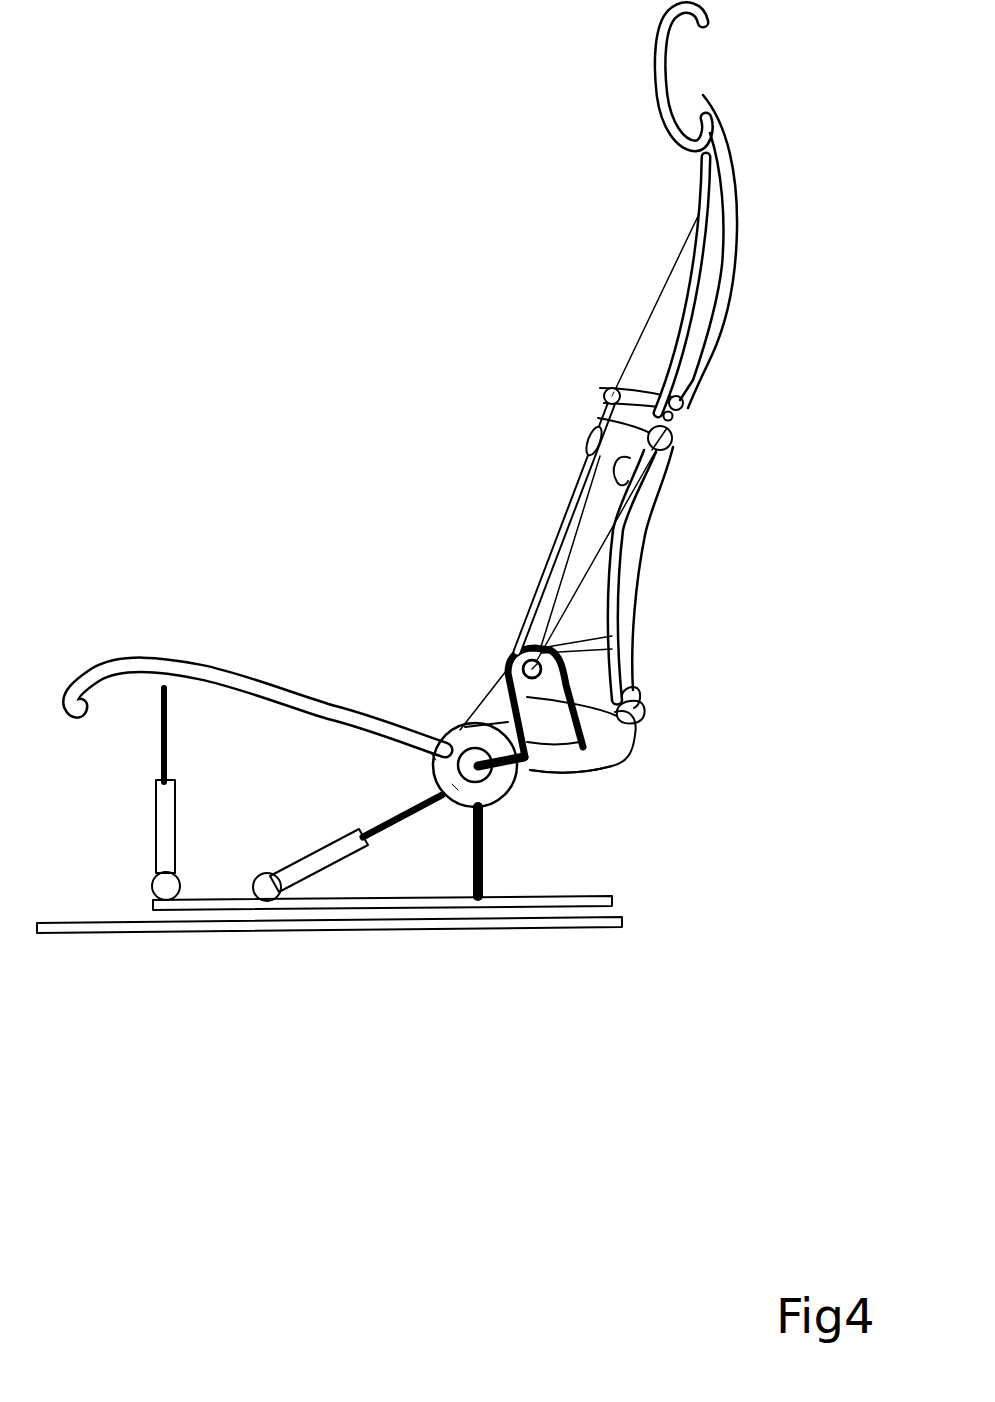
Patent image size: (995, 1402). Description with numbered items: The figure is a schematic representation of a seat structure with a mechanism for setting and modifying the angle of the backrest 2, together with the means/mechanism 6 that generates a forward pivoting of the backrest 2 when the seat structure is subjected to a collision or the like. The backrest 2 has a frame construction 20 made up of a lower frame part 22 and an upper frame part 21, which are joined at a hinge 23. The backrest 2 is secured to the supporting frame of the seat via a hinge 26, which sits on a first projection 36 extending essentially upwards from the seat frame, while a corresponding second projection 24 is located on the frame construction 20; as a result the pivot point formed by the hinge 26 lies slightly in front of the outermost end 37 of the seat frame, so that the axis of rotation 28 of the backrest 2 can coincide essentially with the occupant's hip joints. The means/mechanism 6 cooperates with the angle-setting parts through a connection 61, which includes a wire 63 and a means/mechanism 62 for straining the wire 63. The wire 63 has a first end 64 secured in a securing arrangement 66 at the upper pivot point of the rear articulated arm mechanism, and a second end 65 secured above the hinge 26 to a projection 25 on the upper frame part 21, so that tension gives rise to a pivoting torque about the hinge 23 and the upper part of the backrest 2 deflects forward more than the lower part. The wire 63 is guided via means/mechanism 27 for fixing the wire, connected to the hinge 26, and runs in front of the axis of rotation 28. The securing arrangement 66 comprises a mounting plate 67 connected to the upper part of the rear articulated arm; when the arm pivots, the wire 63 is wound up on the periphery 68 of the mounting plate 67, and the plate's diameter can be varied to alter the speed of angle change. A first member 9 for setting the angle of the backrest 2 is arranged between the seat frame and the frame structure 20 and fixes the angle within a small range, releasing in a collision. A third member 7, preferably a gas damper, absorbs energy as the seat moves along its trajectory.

The backrest 2 is at (700, 418).
The means/mechanism for generating a forward pivoting of the backrest 6 is at (375, 680).
The third member 7 is at (312, 850).
The first member for setting the angle of the backrest 9 is at (634, 714).
The frame construction of the backrest 20 is at (648, 541).
The upper frame part 21 is at (705, 342).
The lower frame part 22 is at (624, 590).
The hinge 23 is at (673, 440).
The second projection 24 is at (533, 663).
The projection 25 is at (610, 388).
The hinge 26 is at (525, 672).
The means/mechanism for fixing the wire 27 is at (525, 658).
The pivot point / axis of rotation 28 is at (576, 644).
The first projection 36 is at (550, 725).
The outermost end of the supporting frame of the seat 37 is at (630, 755).
The connection 61 is at (620, 431).
The means/mechanism for straining the wire 62 is at (452, 725).
The wire 63 is at (560, 525).
The first end of the wire 64 is at (527, 777).
The second end of the wire 65 is at (603, 394).
The securing arrangement 66 is at (606, 391).
The mounting plate 67 is at (455, 787).
The periphery of the mounting plate 68 is at (433, 757).